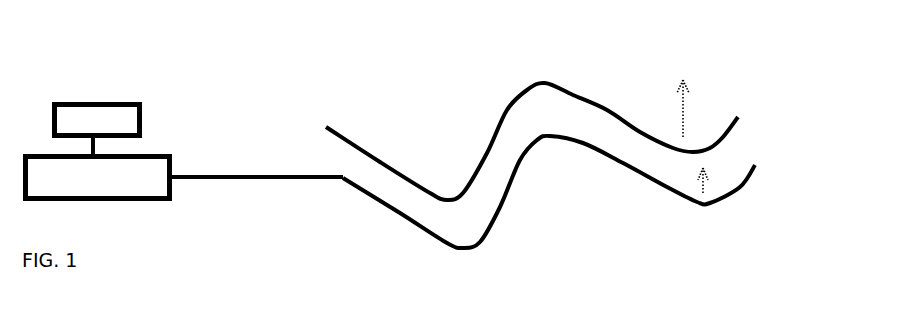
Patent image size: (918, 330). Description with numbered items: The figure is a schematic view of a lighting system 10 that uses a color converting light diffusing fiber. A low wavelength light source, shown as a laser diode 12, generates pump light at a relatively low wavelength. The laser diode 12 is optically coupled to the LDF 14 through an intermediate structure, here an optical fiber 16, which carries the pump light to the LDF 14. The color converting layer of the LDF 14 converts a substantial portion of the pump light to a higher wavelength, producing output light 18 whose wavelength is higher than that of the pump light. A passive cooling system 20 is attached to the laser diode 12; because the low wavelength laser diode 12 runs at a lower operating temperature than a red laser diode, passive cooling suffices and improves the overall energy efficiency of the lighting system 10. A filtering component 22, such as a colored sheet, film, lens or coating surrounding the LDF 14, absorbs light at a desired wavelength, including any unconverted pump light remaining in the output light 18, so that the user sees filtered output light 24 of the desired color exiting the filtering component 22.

The lighting system 10 is at (391, 84).
The laser diode 12 is at (113, 195).
The LDF 14 is at (440, 242).
The optical fiber 16 is at (215, 180).
The output light 18 is at (708, 184).
The passive cooling system 20 is at (125, 117).
The filtering component 22 is at (738, 117).
The filtered output light 24 is at (683, 108).